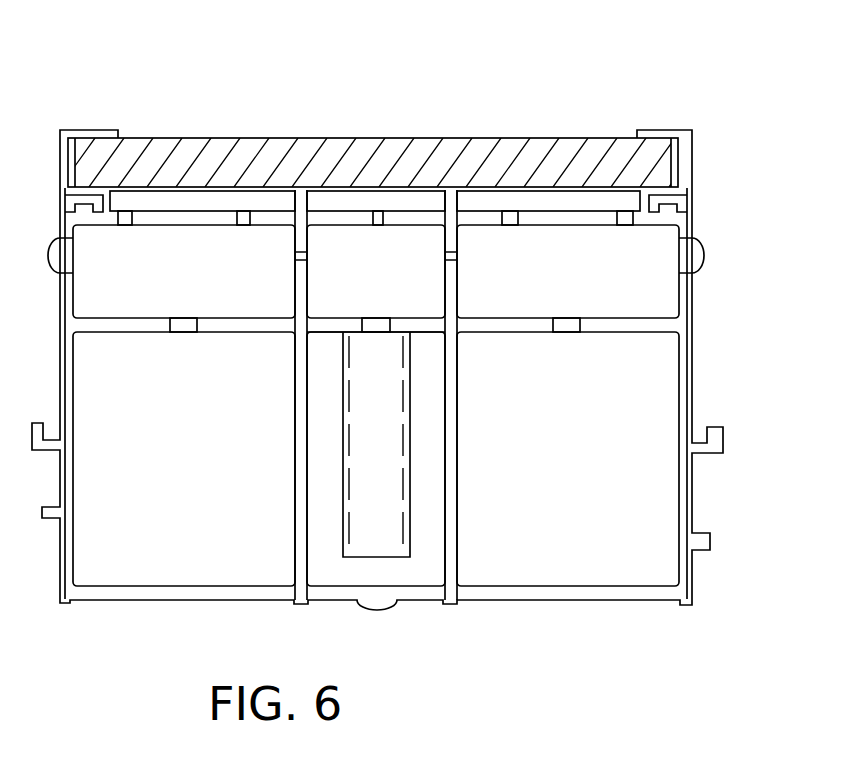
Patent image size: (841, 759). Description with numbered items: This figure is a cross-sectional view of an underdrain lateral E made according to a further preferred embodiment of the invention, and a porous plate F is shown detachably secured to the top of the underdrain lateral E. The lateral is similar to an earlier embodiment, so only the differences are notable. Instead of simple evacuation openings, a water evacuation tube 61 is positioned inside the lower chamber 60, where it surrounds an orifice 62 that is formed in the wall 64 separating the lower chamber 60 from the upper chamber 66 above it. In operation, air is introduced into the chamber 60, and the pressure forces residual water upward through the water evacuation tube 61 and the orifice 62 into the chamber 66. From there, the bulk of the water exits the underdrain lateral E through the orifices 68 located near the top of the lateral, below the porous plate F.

The underdrain lateral E is at (508, 121).
The porous plate F is at (226, 139).
The chamber 60 is at (320, 479).
The water evacuation tube 61 is at (411, 448).
The orifice 62 is at (387, 330).
The wall 64 is at (324, 334).
The chamber 66 is at (343, 242).
The orifices 68 is at (242, 227).